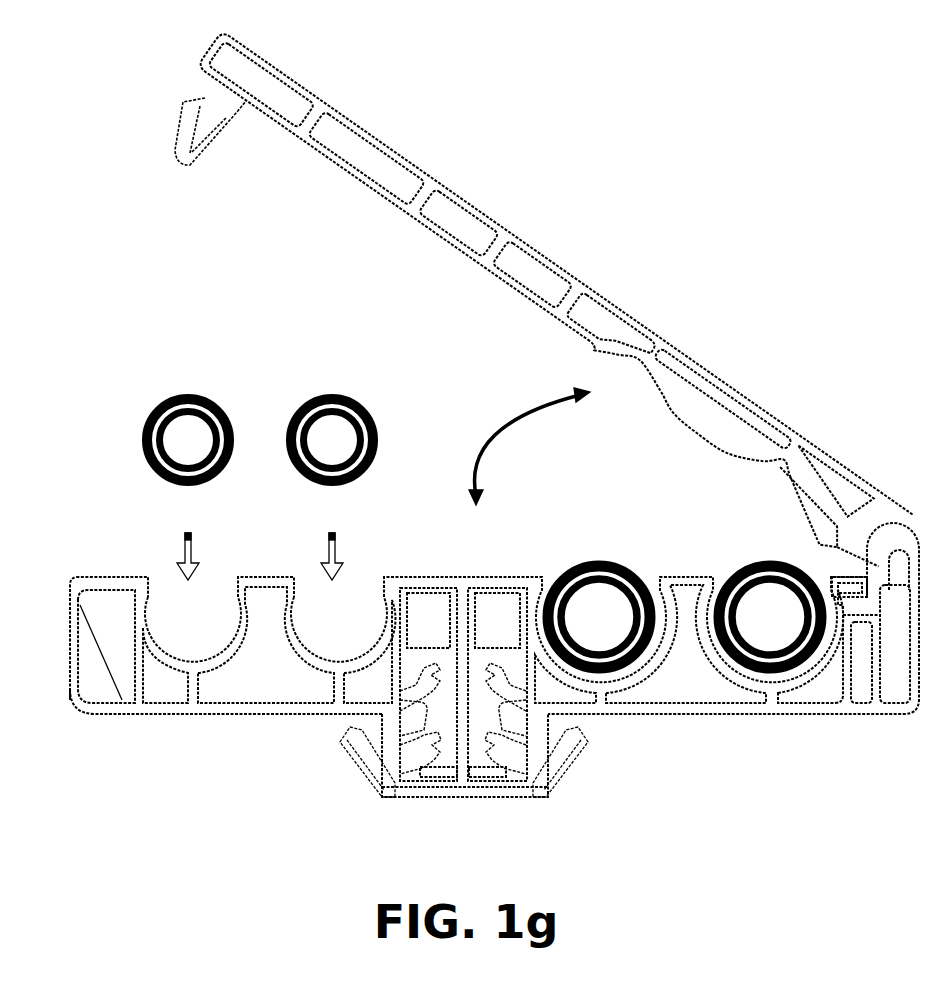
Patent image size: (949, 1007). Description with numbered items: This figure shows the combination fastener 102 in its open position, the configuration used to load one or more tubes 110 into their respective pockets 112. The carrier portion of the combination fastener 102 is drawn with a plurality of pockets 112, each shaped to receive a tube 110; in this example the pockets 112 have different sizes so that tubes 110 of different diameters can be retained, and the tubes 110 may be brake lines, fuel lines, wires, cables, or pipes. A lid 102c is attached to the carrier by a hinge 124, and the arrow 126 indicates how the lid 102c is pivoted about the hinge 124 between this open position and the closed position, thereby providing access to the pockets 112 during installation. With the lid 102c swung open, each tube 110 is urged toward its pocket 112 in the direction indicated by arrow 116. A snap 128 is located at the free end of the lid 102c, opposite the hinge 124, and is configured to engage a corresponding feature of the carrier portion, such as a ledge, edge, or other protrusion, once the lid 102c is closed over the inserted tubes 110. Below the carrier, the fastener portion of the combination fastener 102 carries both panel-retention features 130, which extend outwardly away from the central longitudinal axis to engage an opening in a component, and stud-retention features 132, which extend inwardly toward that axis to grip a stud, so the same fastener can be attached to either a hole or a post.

The combination fastener 102 is at (905, 199).
The lid 102c is at (567, 272).
The tube 110 is at (190, 394).
The pocket 112 is at (208, 642).
The arrow 116 is at (184, 543).
The hinge 124 is at (915, 530).
The arrow 126 is at (506, 420).
The snap 128 is at (185, 101).
The panel-retention features 130 is at (330, 748).
The stud-retention features 132 is at (425, 772).